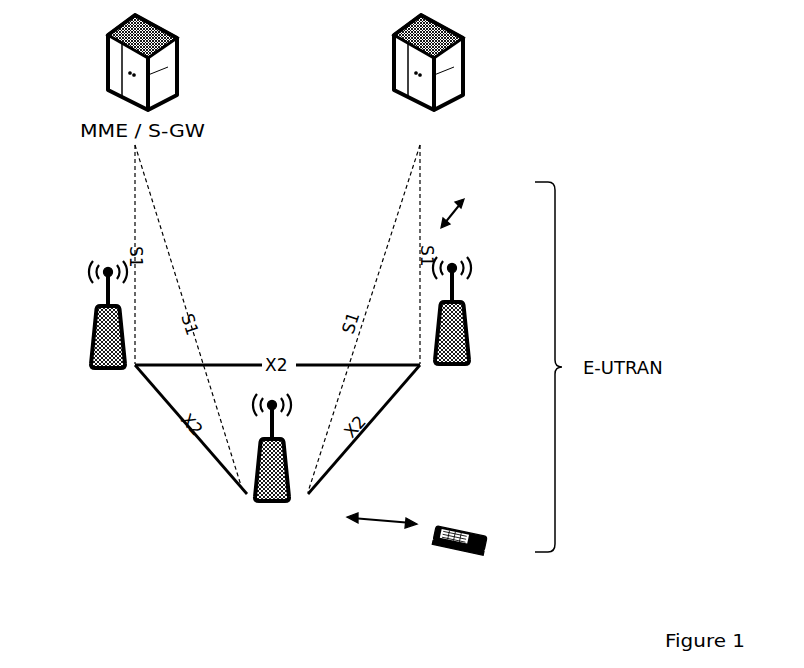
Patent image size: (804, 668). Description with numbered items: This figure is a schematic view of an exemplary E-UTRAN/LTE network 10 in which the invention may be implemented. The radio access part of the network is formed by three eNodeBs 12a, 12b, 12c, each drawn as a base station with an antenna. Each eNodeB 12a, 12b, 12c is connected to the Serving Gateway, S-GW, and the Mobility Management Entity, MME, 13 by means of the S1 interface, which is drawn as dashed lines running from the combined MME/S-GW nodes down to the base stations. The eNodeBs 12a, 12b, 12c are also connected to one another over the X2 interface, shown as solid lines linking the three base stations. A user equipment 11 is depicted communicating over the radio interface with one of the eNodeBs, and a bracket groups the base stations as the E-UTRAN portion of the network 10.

The E-UTRAN/LTE network 10 is at (512, 120).
The user equipment (UE) 11 is at (432, 545).
The eNodeB 12a is at (258, 480).
The eNodeB 12b is at (97, 333).
The eNodeB 12c is at (463, 326).
The Serving Gateway and Mobility Management Entity 13 is at (448, 69).